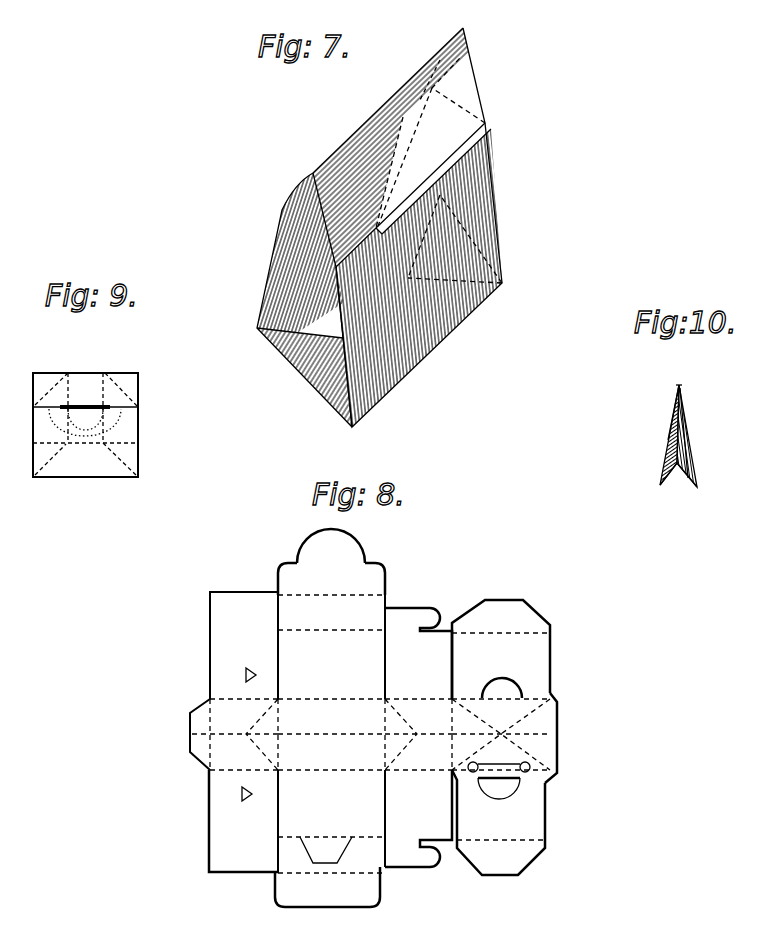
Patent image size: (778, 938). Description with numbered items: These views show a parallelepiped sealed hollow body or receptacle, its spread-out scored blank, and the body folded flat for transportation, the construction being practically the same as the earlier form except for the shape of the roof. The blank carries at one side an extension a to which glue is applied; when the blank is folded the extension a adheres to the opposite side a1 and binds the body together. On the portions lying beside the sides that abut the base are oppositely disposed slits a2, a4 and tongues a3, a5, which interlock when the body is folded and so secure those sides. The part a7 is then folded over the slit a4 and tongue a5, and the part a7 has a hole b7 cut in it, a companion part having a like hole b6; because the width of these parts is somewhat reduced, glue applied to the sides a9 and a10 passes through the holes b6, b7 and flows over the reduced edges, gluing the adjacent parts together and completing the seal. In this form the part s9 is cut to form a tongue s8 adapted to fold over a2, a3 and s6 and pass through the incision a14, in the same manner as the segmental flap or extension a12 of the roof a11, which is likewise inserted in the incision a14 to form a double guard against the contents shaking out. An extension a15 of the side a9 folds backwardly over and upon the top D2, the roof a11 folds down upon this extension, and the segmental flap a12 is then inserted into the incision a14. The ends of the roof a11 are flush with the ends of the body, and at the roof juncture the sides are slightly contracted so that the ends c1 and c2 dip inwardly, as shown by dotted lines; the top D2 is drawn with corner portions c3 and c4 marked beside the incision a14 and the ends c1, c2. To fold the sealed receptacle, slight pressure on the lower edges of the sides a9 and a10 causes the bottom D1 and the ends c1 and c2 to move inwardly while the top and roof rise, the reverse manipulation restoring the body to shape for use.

In FIG. 8, the extension a is at (192, 720).
In FIG. 9, the opposite side a1 is at (140, 385).
In FIG. 8, the opposite side a1 is at (565, 738).
In FIG. 8, the slit or incision a2 is at (243, 821).
In FIG. 8, the tongue a3 is at (426, 864).
In FIG. 8, the slit or incision a4 is at (244, 645).
In FIG. 8, the tongue a5 is at (431, 614).
In FIG. 8, the part of the blank a7 is at (501, 649).
In FIG. 7, the side a9 is at (430, 343).
In FIG. 10, the side a9 is at (700, 436).
In FIG. 7, the side a10 is at (280, 277).
In FIG. 10, the side a10 is at (658, 435).
In FIG. 8, the side a10 is at (331, 664).
In FIG. 7, the roof a11 is at (345, 140).
In FIG. 10, the roof a11 is at (662, 412).
In FIG. 8, the roof a11 is at (331, 579).
In FIG. 8, the segmental flap or extension a12 is at (331, 546).
In FIG. 7, the incision a14 is at (447, 160).
In FIG. 9, the incision a14 is at (112, 408).
In FIG. 8, the incision a14 is at (530, 767).
In FIG. 8, the extension a15 is at (327, 887).
In FIG. 8, the hole b6 is at (508, 790).
In FIG. 8, the hole b7 is at (503, 689).
In FIG. 7, the end c1 is at (297, 341).
In FIG. 9, the end c1 is at (63, 445).
In FIG. 8, the end c1 is at (235, 734).
In FIG. 7, the end c2 is at (445, 241).
In FIG. 9, the end c2 is at (105, 445).
In FIG. 8, the end c2 is at (418, 734).
In FIG. 7, the corner flap c3 is at (407, 107).
In FIG. 9, the corner flap c3 is at (68, 373).
In FIG. 8, the corner flap c3 is at (525, 734).
In FIG. 7, the corner flap c4 is at (439, 90).
In FIG. 9, the corner flap c4 is at (107, 373).
In FIG. 8, the corner flap c4 is at (478, 734).
In FIG. 7, the bottom D1 is at (397, 292).
In FIG. 9, the bottom D1 is at (85, 445).
In FIG. 10, the bottom D1 is at (675, 467).
In FIG. 8, the bottom D1 is at (331, 734).
In FIG. 7, the top D2 is at (332, 112).
In FIG. 9, the top D2 is at (85, 396).
In FIG. 10, the top D2 is at (693, 383).
In FIG. 8, the top D2 is at (501, 734).
In FIG. 8, the part s6 is at (498, 822).
In FIG. 8, the tongue s8 is at (326, 848).
In FIG. 8, the part s9 is at (331, 803).